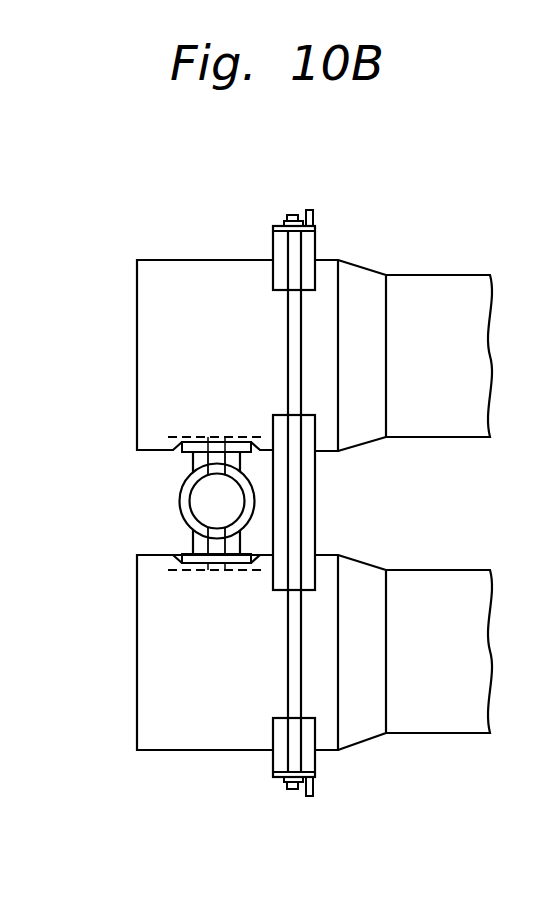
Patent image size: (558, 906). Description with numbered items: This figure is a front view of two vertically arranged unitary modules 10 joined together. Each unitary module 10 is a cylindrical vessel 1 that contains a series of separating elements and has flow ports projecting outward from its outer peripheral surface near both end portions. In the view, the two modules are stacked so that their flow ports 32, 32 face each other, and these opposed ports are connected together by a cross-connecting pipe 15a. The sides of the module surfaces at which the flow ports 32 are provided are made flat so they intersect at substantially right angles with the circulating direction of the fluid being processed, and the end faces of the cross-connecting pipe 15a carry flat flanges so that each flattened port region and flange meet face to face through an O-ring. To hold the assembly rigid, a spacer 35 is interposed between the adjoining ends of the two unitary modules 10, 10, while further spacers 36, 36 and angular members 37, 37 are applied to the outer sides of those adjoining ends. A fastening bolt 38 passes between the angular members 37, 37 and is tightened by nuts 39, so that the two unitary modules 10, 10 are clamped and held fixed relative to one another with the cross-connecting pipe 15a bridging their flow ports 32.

The cylindrical vessel 1 is at (443, 295).
The unitary module 10 is at (359, 246).
The cross-connecting pipe 15a is at (198, 497).
The flow port 32 is at (217, 436).
The spacer 35 is at (305, 501).
The spacer 36 is at (270, 274).
The angular member 37 is at (309, 209).
The fastening bolt 38 is at (298, 661).
The nut 39 is at (284, 214).